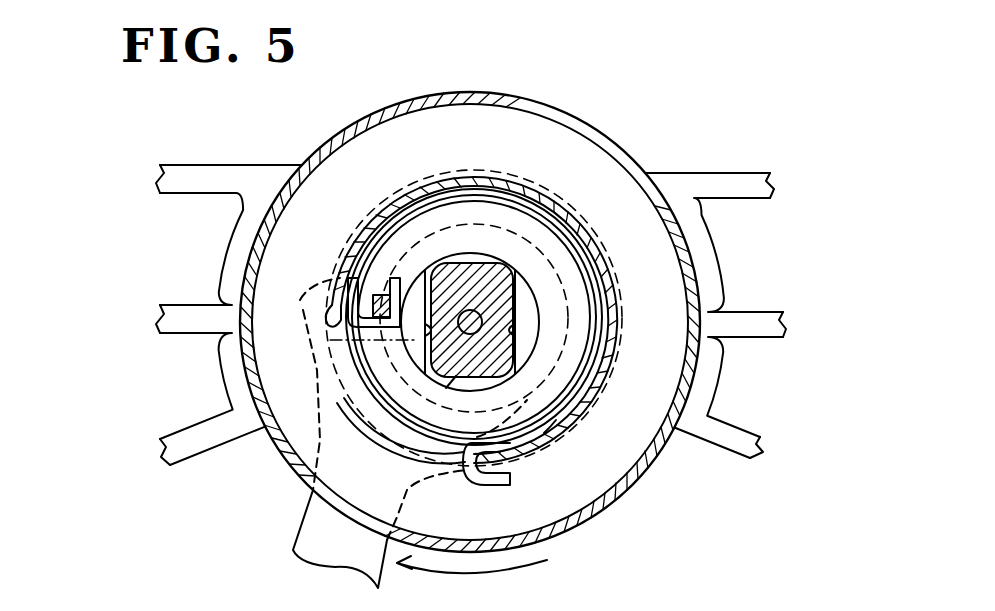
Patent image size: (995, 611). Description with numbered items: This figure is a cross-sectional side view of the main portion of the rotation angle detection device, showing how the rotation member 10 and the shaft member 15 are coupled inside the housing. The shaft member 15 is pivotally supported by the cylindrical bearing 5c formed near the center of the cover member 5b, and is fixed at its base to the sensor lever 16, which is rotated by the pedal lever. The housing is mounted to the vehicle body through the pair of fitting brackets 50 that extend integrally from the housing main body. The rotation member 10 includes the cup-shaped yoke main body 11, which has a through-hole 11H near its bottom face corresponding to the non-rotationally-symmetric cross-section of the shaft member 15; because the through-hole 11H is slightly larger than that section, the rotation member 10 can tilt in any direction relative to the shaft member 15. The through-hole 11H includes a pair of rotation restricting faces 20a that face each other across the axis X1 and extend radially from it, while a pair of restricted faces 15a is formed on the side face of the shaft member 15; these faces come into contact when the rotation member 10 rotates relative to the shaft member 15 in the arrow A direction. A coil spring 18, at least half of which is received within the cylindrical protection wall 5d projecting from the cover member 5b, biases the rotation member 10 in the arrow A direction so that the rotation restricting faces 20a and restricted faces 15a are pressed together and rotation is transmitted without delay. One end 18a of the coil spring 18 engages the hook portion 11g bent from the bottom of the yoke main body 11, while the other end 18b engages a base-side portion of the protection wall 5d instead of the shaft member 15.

The rotation member 10 is at (510, 162).
The cover member 5b is at (583, 125).
The fitting brackets 50 is at (217, 165).
The bearing 5c is at (465, 250).
The protection wall 5d is at (520, 186).
The coil spring 18 is at (567, 227).
The restricted faces 15a is at (410, 208).
The one end of the coil spring 18a is at (362, 232).
The hook portion 11g is at (350, 283).
The yoke main body 11 is at (312, 287).
The rotation restricting faces 20a is at (428, 332).
The axis X1 is at (450, 385).
The shaft member 15 is at (520, 372).
The through-hole 11H is at (568, 425).
The other end of the coil spring 18b is at (493, 487).
The sensor lever 16 is at (303, 530).
The arrow A direction A is at (520, 570).